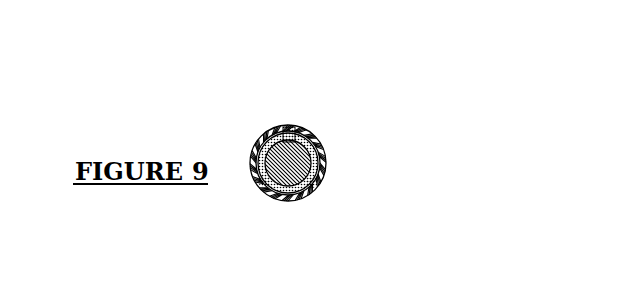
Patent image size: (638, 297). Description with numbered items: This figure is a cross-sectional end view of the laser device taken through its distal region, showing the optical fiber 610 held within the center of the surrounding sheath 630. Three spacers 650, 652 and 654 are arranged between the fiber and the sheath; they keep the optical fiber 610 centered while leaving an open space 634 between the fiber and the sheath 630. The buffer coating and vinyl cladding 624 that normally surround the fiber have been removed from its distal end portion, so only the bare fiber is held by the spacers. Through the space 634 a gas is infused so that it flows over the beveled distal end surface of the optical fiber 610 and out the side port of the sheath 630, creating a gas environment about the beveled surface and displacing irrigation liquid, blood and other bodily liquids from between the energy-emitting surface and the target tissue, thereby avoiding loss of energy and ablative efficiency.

The optical fiber 610 is at (281, 162).
The spacer 650 is at (266, 137).
The spacer 652 is at (322, 180).
The sheath 630 is at (306, 130).
The space 634 is at (310, 164).
The spacer 654 is at (260, 177).
The buffer coating and vinyl cladding 624 is at (306, 186).